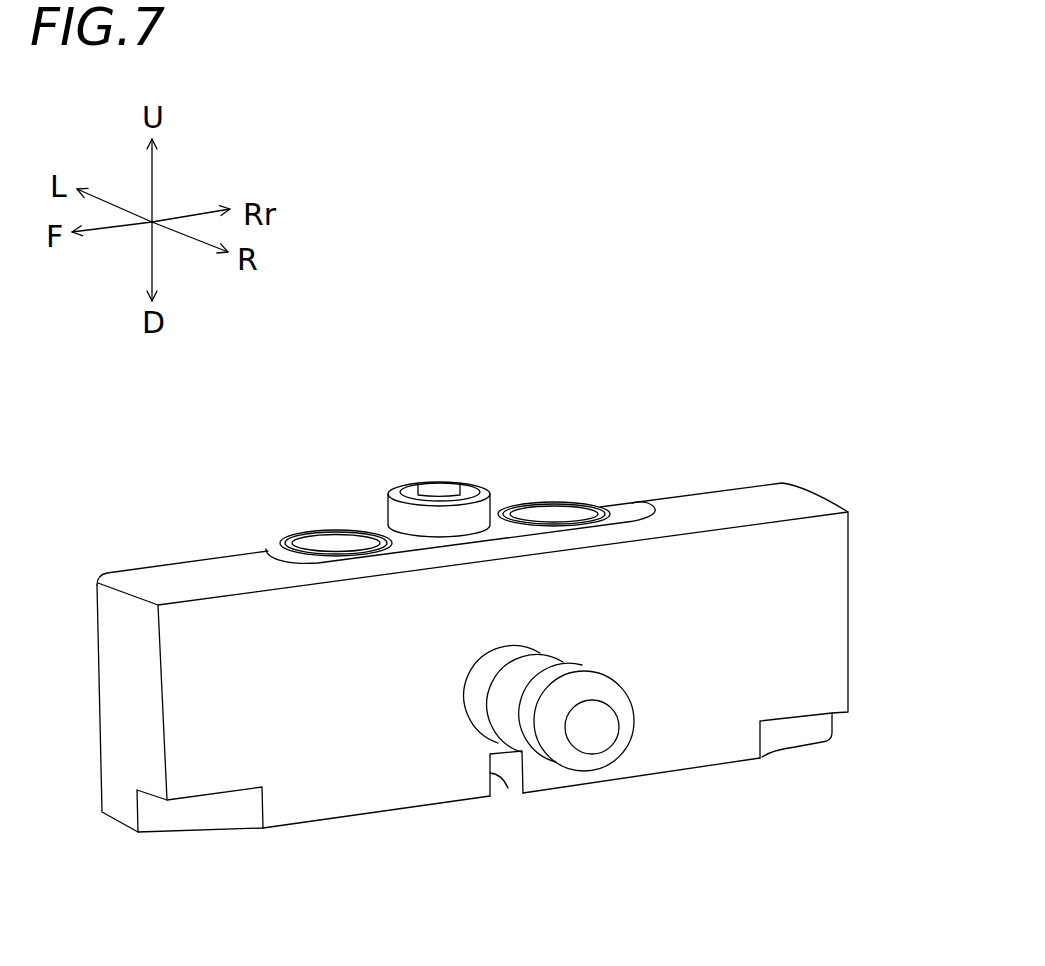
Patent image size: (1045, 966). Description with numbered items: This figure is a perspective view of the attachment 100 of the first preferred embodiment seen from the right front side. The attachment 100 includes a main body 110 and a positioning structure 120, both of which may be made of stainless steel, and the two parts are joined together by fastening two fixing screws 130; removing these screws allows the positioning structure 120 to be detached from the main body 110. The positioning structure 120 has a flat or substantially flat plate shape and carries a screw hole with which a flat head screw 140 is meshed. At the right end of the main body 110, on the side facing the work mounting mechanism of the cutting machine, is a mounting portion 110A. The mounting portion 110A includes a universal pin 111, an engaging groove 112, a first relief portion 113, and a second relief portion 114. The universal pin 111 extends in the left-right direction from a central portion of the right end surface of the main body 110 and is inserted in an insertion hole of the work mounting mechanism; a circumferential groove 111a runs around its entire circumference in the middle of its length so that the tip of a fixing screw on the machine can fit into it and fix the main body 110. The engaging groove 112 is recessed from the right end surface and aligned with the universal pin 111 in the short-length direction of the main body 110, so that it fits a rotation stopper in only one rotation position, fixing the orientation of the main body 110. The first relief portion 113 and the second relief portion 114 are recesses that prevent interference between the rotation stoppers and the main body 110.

The attachment 100 is at (696, 346).
The main body 110 is at (188, 572).
The mounting portion 110A is at (575, 852).
The universal pin 111 is at (632, 717).
The circumferential groove 111a is at (532, 670).
The engaging groove 112 is at (509, 790).
The first relief portion 113 is at (207, 810).
The second relief portion 114 is at (793, 732).
The positioning structure 120 is at (375, 532).
The fixing screws 130 is at (324, 548).
The flat head screw 140 is at (416, 482).